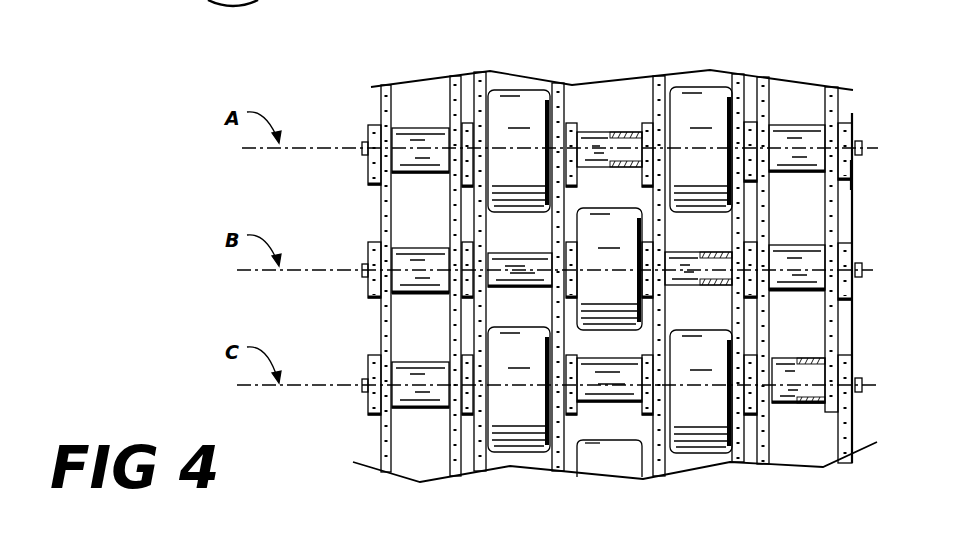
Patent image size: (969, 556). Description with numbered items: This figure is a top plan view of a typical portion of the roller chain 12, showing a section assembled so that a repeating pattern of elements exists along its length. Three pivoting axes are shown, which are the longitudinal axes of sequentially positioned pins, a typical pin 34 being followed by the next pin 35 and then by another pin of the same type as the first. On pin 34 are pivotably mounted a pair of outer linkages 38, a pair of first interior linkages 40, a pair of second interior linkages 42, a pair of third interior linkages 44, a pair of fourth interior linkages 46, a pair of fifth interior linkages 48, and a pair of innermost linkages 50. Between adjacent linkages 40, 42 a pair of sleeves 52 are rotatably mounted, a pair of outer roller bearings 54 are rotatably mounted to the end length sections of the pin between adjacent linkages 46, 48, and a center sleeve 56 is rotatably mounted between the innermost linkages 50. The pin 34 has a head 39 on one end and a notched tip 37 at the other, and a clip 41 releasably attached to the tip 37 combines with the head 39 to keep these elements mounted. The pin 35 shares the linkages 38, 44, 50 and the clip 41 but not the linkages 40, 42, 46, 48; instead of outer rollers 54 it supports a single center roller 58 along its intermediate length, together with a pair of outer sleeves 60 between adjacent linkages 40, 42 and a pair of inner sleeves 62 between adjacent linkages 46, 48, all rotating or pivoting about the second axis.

The chain 12 is at (126, 310).
The pin 34 is at (618, 132).
The pin 35 is at (720, 290).
The notched tip 37 is at (862, 142).
The outer linkages 38 is at (381, 208).
The head 39 is at (363, 155).
The first interior linkages 40 is at (381, 113).
The clip 41 is at (856, 182).
The second interior linkages 42 is at (457, 80).
The third interior linkages 44 is at (466, 238).
The fourth interior linkages 46 is at (483, 75).
The fifth interior linkages 48 is at (559, 86).
The innermost linkages 50 is at (571, 122).
The sleeves 52 is at (422, 135).
The outer roller bearings 54 is at (517, 105).
The center sleeve 56 is at (594, 133).
The center roller 58 is at (635, 440).
The outer sleeves 60 is at (408, 296).
The inner sleeves 62 is at (718, 250).